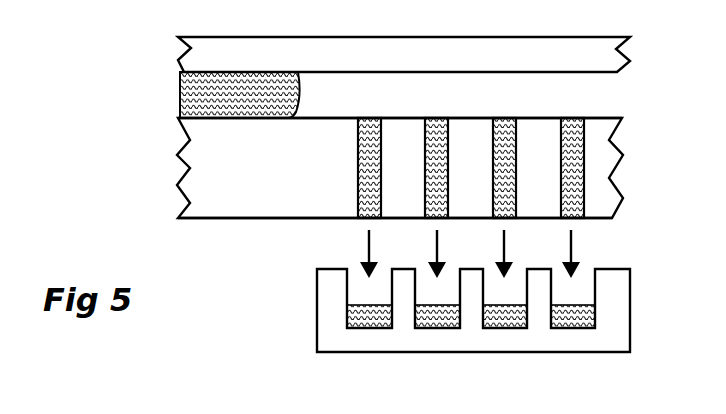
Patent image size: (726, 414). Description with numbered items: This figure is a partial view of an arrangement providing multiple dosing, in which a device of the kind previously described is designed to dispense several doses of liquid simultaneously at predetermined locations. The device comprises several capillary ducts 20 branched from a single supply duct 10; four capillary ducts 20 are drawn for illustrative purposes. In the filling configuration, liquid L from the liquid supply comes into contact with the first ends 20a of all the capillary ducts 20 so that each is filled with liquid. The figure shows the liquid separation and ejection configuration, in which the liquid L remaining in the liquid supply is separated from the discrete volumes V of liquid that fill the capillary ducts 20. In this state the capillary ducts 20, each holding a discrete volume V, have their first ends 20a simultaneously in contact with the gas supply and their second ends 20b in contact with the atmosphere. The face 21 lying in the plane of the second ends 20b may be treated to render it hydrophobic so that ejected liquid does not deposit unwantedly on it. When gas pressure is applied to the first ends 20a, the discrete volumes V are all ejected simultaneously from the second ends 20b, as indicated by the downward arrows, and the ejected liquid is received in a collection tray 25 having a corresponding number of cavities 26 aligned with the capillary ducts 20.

The supply duct 10 is at (432, 72).
The liquid L is at (235, 101).
The capillary duct 20 is at (583, 163).
The first end 20a is at (583, 118).
The second end 20b is at (583, 218).
The face 21 is at (280, 219).
The discrete volume of liquid V is at (370, 118).
The collection tray 25 is at (317, 306).
The cavity 26 is at (597, 283).